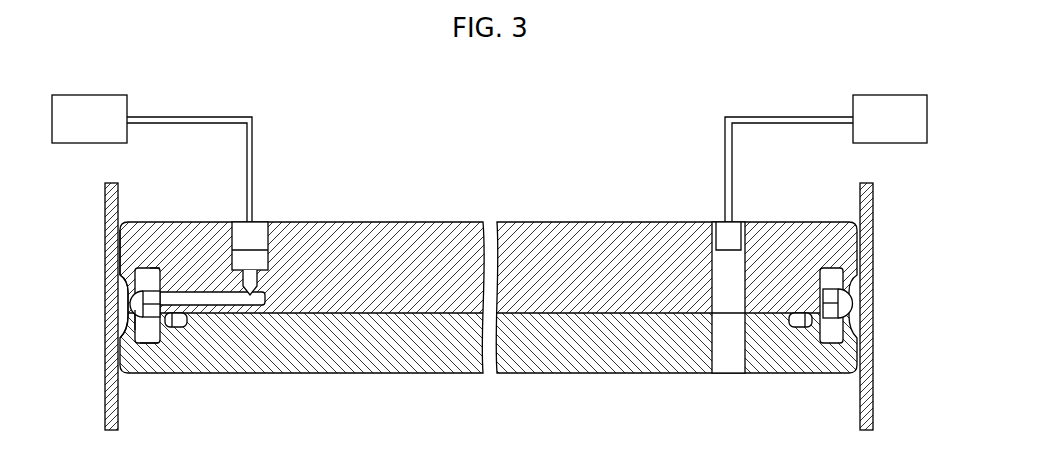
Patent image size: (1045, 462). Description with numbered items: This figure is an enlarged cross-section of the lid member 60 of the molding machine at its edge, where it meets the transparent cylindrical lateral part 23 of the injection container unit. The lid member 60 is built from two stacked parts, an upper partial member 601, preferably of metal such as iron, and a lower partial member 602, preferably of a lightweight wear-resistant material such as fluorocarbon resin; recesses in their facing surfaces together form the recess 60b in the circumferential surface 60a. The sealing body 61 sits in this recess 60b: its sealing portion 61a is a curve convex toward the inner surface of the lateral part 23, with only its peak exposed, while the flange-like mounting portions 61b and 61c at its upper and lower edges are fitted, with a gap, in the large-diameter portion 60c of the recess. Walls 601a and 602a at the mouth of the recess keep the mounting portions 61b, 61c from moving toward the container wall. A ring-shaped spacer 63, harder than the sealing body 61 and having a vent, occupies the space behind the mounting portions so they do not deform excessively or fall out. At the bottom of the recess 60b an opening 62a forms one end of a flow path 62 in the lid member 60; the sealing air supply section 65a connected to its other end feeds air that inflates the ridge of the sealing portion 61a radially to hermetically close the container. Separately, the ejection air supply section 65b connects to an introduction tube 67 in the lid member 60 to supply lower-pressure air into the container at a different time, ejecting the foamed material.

The lateral part 23 is at (105, 402).
The lid member 60 is at (442, 242).
The circumferential surface 60a is at (120, 240).
The recess 60b is at (126, 290).
The large-diameter portion 60c is at (151, 270).
The upper partial member 601 is at (434, 224).
The wall 601a is at (129, 276).
The lower partial member 602 is at (433, 372).
The wall 602a is at (122, 345).
The sealing body 61 is at (445, 312).
The sealing portion 61a is at (126, 320).
The mounting portion 61b is at (160, 285).
The mounting portion 61c is at (148, 344).
The flow path 62 is at (222, 300).
The opening 62a is at (177, 328).
The spacer 63 is at (131, 306).
The sealing air supply section 65a is at (93, 95).
The ejection air supply section 65b is at (890, 95).
The introduction tube 67 is at (742, 292).